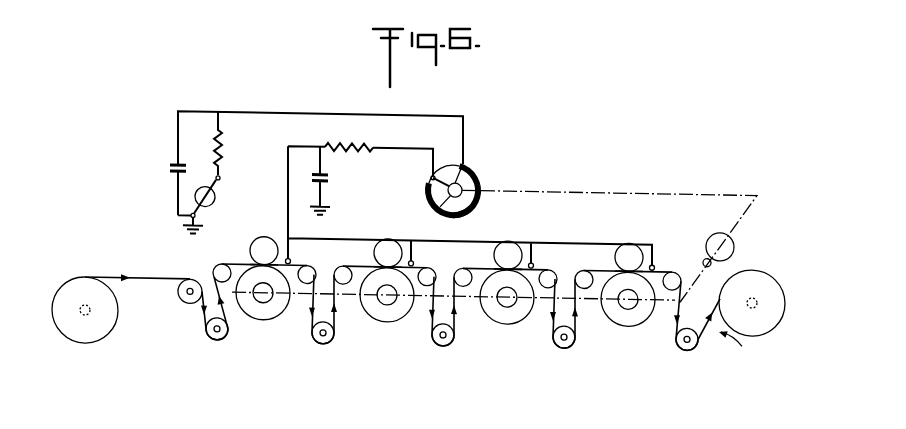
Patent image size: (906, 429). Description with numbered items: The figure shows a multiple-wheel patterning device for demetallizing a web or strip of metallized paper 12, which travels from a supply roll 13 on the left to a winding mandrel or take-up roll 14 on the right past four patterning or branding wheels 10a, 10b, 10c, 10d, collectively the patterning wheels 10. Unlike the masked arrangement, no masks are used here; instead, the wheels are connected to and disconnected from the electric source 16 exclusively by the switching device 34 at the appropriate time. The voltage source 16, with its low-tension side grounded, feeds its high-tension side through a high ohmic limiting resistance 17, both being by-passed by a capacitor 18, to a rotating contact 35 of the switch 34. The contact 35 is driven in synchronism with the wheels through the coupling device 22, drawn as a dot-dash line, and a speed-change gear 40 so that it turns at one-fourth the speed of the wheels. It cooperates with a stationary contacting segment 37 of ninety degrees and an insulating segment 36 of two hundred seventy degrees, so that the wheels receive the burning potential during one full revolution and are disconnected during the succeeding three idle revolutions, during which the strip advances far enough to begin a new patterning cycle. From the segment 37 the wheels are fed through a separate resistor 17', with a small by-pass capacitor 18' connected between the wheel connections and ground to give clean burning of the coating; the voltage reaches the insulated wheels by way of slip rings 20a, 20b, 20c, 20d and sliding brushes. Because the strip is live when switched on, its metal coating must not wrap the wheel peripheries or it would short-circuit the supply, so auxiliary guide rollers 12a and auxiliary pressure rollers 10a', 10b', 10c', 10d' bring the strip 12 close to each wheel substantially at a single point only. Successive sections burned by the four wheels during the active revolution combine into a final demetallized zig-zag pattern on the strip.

The patterning wheels 10 is at (724, 330).
The patterning wheel 10a is at (251, 313).
The patterning wheel 10b is at (370, 314).
The patterning wheel 10c is at (490, 316).
The patterning wheel 10d is at (611, 318).
The auxiliary pressure roller 10a' is at (251, 247).
The auxiliary pressure roller 10b' is at (373, 252).
The auxiliary pressure roller 10c' is at (493, 254).
The auxiliary pressure roller 10d' is at (614, 257).
The web or strip of metallized paper 12 is at (151, 272).
The auxiliary guide rollers 12a is at (213, 264).
The supply roll 13 is at (85, 338).
The take-up roll 14 is at (763, 259).
The voltage source 16 is at (215, 191).
The limiting resistance 17 is at (232, 144).
The resistor 17' is at (349, 140).
The capacitor 18 is at (161, 157).
The by-pass capacitor 18' is at (334, 172).
The slip ring 20a is at (245, 307).
The slip ring 20b is at (372, 301).
The slip ring 20c is at (492, 301).
The slip ring 20d is at (613, 301).
The coupling device 22 is at (653, 170).
The switching device 34 is at (494, 153).
The rotating contact 35 is at (482, 177).
The insulating segment 36 is at (477, 194).
The contacting segment 37 is at (431, 170).
The speed-change gear 40 is at (736, 240).